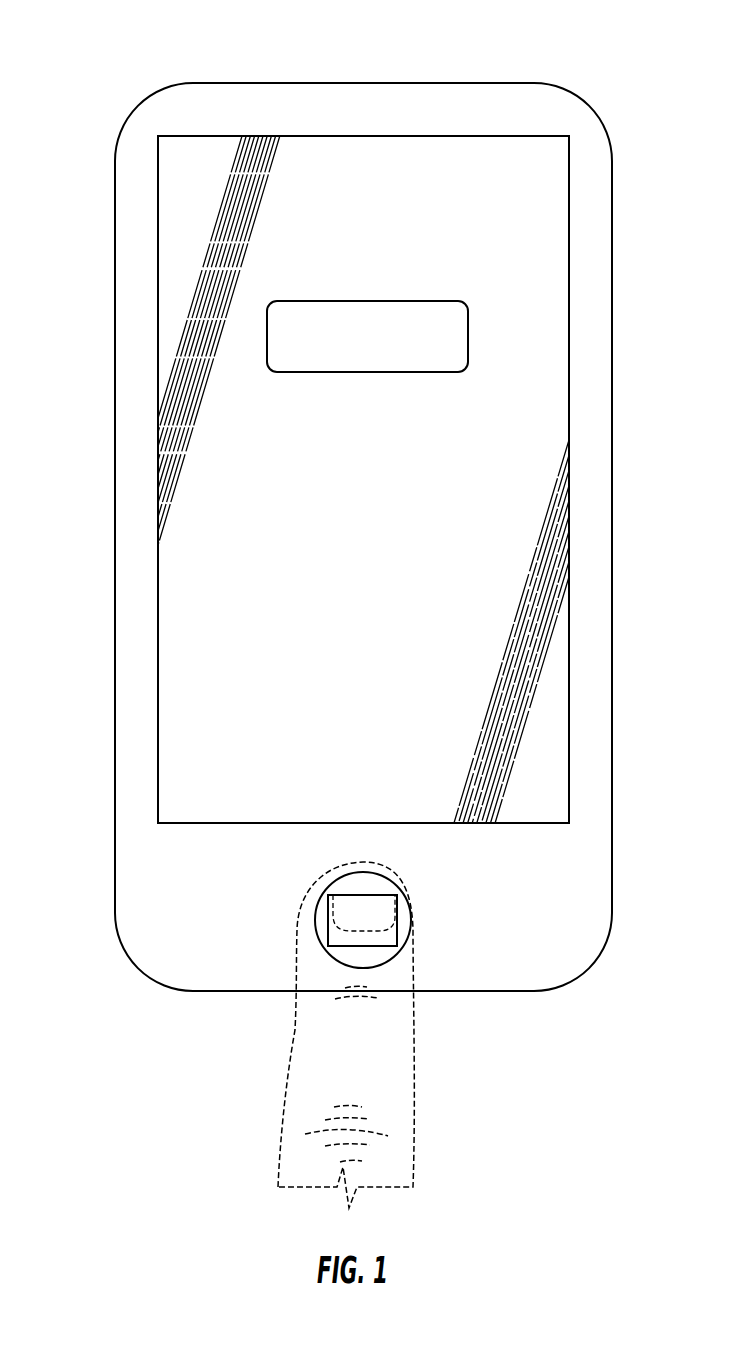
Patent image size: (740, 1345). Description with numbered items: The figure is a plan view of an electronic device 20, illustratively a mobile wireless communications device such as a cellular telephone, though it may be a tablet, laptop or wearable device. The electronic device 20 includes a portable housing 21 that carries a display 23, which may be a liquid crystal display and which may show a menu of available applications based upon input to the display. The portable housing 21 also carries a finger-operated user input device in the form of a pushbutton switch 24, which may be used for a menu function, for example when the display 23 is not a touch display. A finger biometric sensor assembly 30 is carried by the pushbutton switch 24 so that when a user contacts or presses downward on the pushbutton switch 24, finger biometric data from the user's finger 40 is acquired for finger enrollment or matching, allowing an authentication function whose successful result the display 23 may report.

The electronic device 20 is at (64, 144).
The portable housing 21 is at (115, 258).
The display 23 is at (158, 303).
The pushbutton switch 24 is at (397, 954).
The finger biometric sensor assembly 30 is at (398, 927).
The finger 40 is at (295, 1032).